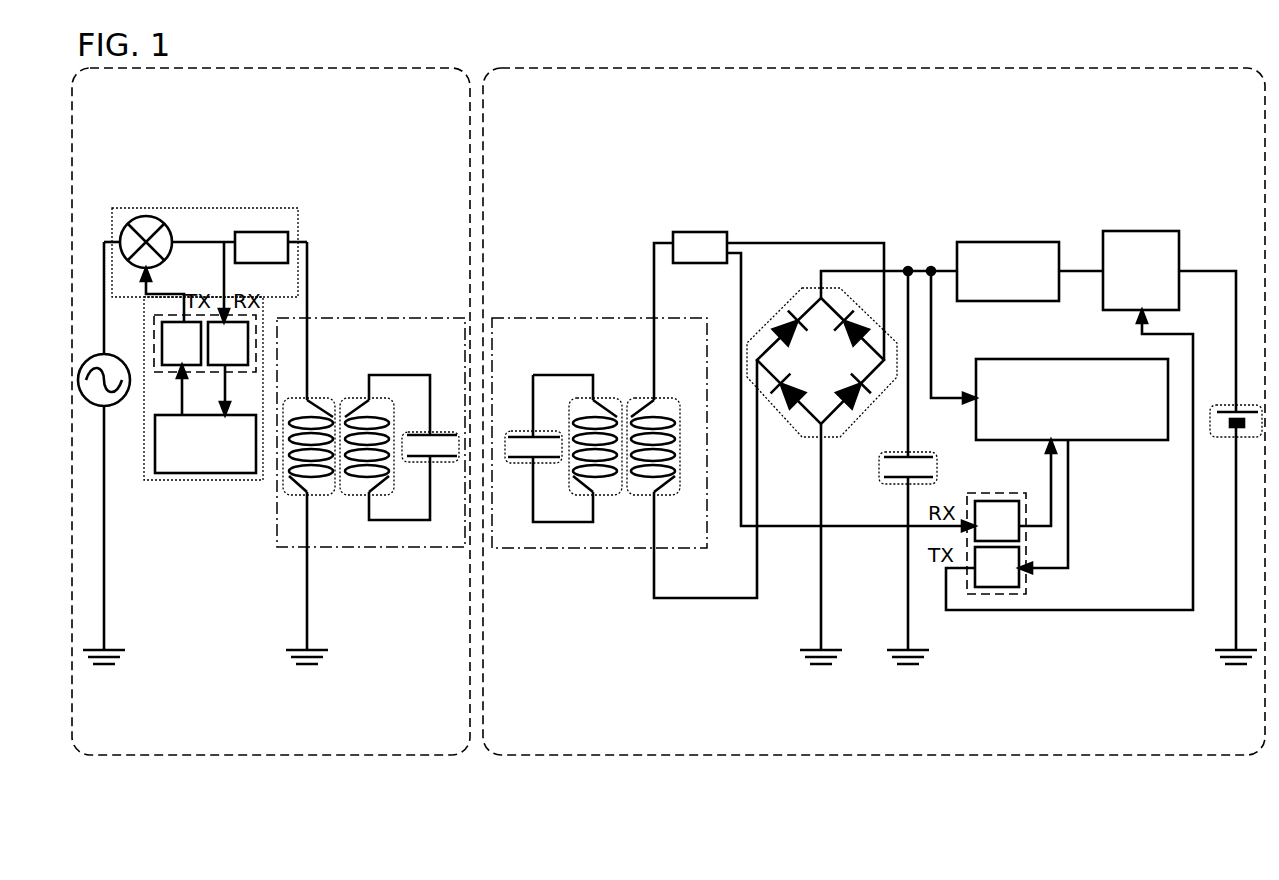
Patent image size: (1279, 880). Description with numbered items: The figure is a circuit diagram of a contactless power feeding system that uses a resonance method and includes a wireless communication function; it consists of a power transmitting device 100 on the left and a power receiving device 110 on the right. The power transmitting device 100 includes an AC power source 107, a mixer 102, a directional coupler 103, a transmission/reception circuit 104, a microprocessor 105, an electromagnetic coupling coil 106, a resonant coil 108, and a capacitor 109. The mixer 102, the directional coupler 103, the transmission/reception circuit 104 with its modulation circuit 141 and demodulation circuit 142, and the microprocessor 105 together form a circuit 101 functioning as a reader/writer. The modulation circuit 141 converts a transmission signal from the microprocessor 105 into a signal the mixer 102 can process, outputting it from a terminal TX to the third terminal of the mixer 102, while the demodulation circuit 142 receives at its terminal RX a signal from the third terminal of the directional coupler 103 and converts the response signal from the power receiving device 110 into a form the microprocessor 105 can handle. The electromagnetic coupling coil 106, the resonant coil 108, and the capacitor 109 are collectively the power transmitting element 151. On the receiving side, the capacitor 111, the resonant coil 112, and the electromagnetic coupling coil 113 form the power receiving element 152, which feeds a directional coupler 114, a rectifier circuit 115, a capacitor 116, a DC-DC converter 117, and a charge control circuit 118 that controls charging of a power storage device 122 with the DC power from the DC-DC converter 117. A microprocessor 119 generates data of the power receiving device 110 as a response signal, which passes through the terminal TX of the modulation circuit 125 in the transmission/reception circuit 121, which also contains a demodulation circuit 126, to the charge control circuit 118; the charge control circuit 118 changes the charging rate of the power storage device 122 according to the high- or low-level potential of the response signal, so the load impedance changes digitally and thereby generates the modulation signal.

The power transmitting device 100 is at (206, 737).
The power receiving device 110 is at (577, 737).
The circuit functioning as a reader/writer 101 is at (277, 208).
The mixer 102 is at (140, 216).
The directional coupler 103 is at (261, 247).
The transmission/reception circuit 104 is at (258, 318).
The microprocessor 105 is at (205, 444).
The electromagnetic coupling coil 106 is at (328, 398).
The AC power source 107 is at (118, 406).
The resonant coil 108 is at (352, 496).
The capacitor 109 is at (440, 432).
The capacitor 111 is at (522, 431).
The resonant coil 112 is at (605, 398).
The electromagnetic coupling coil 113 is at (668, 398).
The directional coupler 114 is at (700, 247).
The rectifier circuit 115 is at (778, 412).
The capacitor 116 is at (888, 452).
The DC-DC converter 117 is at (1008, 271).
The charge control circuit 118 is at (1141, 270).
The microprocessor 119 is at (1072, 399).
The transmission/reception circuit 121 is at (1000, 595).
The power storage device 122 is at (1216, 437).
The modulation circuit 125 is at (997, 567).
The demodulation circuit 126 is at (997, 521).
The modulation circuit 141 is at (181, 343).
The demodulation circuit 142 is at (228, 343).
The power transmitting element 151 is at (401, 548).
The power receiving element 152 is at (578, 549).